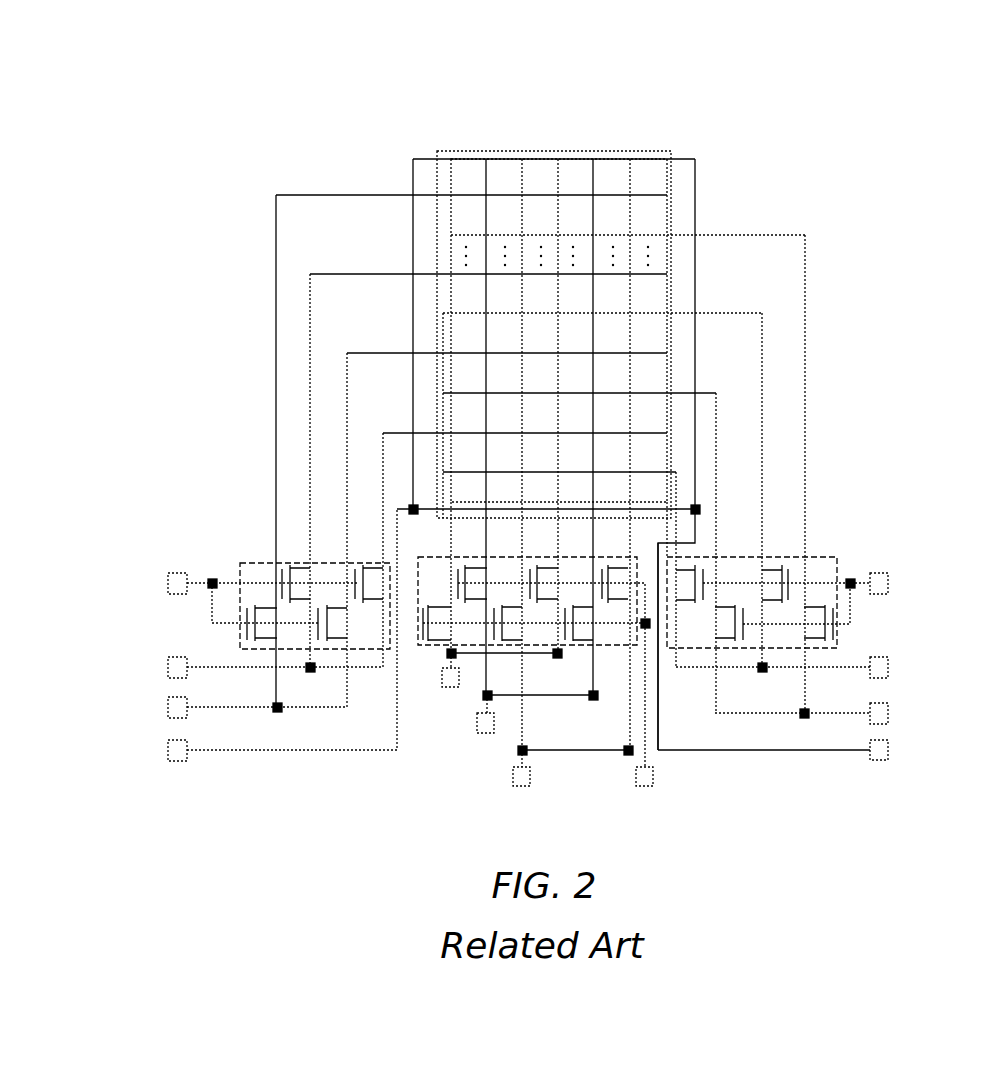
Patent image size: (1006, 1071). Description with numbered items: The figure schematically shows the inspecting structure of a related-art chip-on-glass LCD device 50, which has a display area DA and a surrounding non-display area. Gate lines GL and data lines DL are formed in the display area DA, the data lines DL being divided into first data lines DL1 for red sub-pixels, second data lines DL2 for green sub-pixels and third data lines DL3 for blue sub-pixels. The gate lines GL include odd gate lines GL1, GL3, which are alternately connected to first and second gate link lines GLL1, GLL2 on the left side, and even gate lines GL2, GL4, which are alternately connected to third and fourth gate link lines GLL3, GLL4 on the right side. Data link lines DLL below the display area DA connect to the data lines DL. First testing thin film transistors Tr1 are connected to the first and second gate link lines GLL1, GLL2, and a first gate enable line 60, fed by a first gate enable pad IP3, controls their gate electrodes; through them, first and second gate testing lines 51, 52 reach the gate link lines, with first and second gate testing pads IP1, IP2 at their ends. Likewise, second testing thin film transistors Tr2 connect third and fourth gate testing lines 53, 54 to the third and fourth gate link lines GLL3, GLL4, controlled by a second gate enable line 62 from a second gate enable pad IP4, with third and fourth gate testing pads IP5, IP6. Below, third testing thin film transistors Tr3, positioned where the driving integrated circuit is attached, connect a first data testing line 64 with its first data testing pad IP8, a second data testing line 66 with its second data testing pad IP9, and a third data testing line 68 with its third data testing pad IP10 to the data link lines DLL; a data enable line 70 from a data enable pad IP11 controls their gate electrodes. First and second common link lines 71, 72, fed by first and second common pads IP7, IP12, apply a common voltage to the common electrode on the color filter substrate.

The COG type LCD device 50 is at (634, 408).
The first gate testing line 51 is at (224, 669).
The second gate testing line 52 is at (257, 709).
The third gate testing line 53 is at (832, 715).
The fourth gate testing line 54 is at (786, 669).
The first gate enable line 60 is at (198, 588).
The second gate enable line 62 is at (856, 590).
The first data testing line 64 is at (444, 665).
The second data testing line 66 is at (480, 706).
The third data testing line 68 is at (518, 762).
The data enable line 70 is at (660, 720).
The first common link line 71 is at (305, 752).
The second common link line 72 is at (745, 752).
The display area DA is at (650, 162).
The data lines DL is at (559, 419).
The first data lines DL1 is at (457, 170).
The second data lines DL2 is at (490, 170).
The third data lines DL3 is at (553, 384).
The data link lines DLL is at (447, 528).
The gate lines GL is at (544, 315).
The odd gate line GL1 is at (655, 190).
The even gate line GL2 is at (655, 230).
The odd gate line GL3 is at (655, 270).
The even gate line GL4 is at (607, 294).
The first gate link line GLL1 is at (276, 348).
The second gate link line GLL2 is at (310, 437).
The third gate link line GLL3 is at (805, 393).
The fourth gate link line GLL4 is at (762, 483).
The first testing thin film transistors Tr1 is at (262, 563).
The second testing thin film transistors Tr2 is at (840, 565).
The third testing thin film transistors Tr3 is at (418, 650).
The first gate testing pad IP1 is at (166, 667).
The second gate testing pad IP2 is at (166, 707).
The first gate enable pad IP3 is at (166, 583).
The second gate enable pad IP4 is at (890, 583).
The third gate testing pad IP5 is at (890, 713).
The fourth gate testing pad IP6 is at (890, 667).
The first common pad IP7 is at (166, 750).
The first data testing pad IP8 is at (450, 689).
The second data testing pad IP9 is at (485, 735).
The third data testing pad IP10 is at (533, 776).
The data enable pad IP11 is at (655, 776).
The second common pad IP12 is at (890, 750).